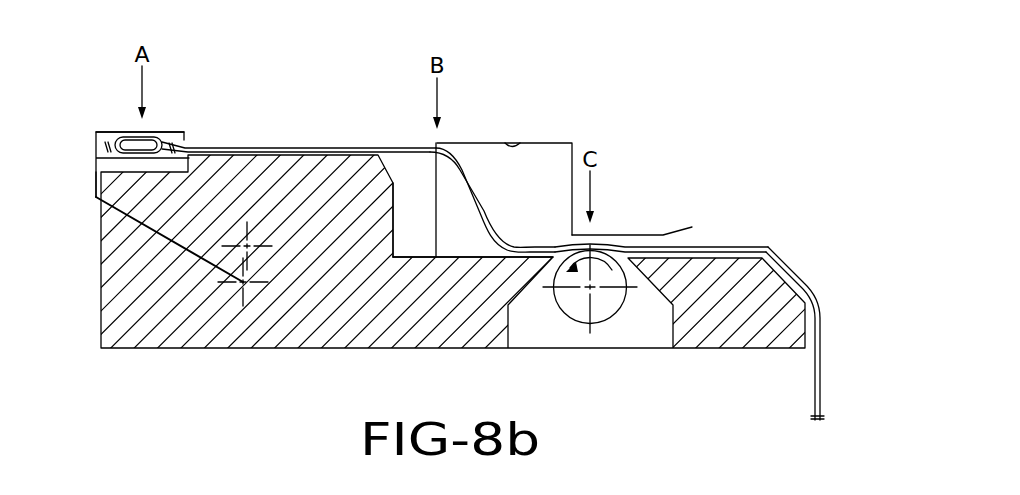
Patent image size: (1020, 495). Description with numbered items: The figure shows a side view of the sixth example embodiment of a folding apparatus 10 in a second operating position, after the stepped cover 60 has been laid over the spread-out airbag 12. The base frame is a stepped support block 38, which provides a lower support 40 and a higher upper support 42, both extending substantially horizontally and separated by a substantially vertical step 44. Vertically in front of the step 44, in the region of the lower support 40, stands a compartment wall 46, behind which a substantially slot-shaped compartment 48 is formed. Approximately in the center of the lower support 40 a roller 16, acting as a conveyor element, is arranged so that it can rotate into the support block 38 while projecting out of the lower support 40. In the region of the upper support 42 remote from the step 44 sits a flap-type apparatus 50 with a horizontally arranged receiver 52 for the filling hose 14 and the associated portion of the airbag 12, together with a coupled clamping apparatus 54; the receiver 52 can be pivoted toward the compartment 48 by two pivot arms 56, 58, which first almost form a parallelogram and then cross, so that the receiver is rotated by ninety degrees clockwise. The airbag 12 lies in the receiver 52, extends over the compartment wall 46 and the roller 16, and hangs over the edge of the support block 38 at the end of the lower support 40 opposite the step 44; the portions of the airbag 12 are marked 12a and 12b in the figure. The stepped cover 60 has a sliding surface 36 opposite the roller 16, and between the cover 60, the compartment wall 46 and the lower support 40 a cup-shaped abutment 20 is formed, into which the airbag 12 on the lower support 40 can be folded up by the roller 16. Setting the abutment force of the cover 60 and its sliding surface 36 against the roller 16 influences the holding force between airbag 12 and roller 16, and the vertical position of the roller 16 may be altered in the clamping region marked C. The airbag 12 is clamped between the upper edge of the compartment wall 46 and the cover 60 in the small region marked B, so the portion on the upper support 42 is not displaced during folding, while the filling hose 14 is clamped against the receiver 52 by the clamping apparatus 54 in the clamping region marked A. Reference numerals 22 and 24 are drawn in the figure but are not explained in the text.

The folding apparatus 10 is at (240, 95).
The airbag 12 is at (828, 320).
The film web portion 12a is at (627, 245).
The film web portion 12b is at (474, 200).
The filling hose 14 is at (153, 143).
The roller 16 is at (568, 318).
The cup-shaped abutment 20 is at (495, 130).
The block surface 22 is at (528, 146).
The channel floor 24 is at (453, 258).
The sliding surface 36 is at (612, 242).
The stepped support block 38 is at (298, 326).
The lower support 40 is at (739, 252).
The upper support 42 is at (331, 147).
The step 44 is at (401, 185).
The compartment wall 46 is at (438, 182).
The compartment 48 is at (430, 228).
The flap-type apparatus 50 is at (84, 188).
The receiver 52 is at (97, 158).
The clamping apparatus 54 is at (117, 132).
The pivot arm 56 is at (142, 223).
The pivot arm 58 is at (205, 228).
The stepped cover 60 is at (561, 143).